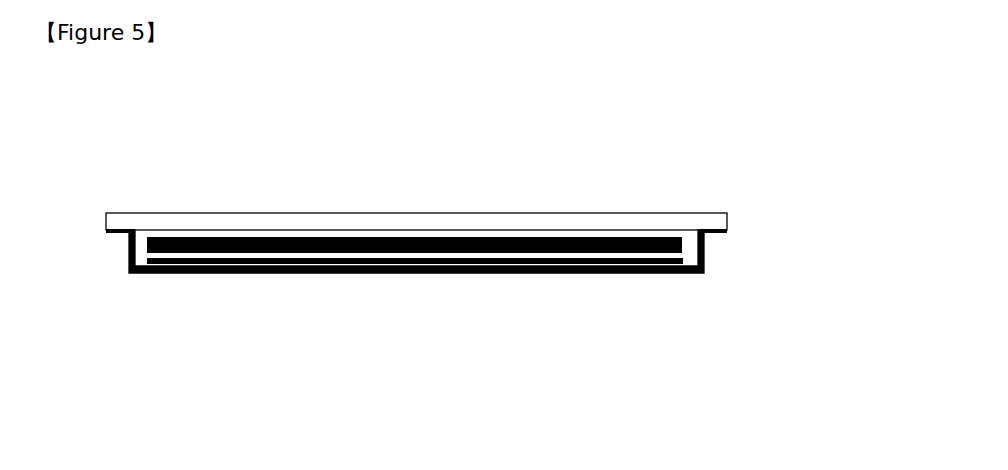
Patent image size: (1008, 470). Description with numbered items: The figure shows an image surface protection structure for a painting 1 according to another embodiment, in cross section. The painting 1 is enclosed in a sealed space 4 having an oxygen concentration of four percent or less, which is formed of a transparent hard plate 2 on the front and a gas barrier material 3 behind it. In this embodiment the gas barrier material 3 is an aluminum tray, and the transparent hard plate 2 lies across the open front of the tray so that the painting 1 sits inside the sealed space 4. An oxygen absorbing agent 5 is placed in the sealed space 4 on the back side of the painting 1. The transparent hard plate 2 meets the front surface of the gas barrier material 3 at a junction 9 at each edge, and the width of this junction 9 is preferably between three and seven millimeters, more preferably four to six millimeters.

The painting 1 is at (708, 240).
The transparent hard plate 2 is at (366, 213).
The gas barrier material 3 is at (245, 273).
The sealed space 4 is at (692, 273).
The oxygen absorbing agent 5 is at (427, 273).
The junction 9 is at (116, 233).